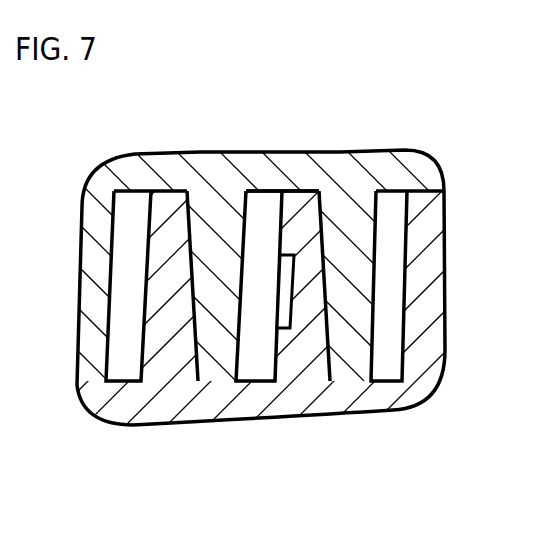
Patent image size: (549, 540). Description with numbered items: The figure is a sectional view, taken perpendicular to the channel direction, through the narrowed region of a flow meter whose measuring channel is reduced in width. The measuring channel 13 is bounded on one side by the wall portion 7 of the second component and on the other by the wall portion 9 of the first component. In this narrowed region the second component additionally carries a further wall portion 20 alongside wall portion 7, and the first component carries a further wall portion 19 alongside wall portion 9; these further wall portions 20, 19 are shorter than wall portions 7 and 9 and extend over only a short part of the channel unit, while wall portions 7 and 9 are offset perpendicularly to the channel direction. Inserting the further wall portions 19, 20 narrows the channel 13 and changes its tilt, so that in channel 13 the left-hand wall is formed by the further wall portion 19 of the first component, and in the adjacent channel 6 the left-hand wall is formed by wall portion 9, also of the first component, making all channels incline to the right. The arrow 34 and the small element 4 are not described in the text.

The insert piece 4 is at (283, 287).
The adjacent channel 6 is at (393, 308).
The wall portion 7 is at (168, 327).
The wall portion 9 is at (350, 220).
The measuring channel 13 is at (258, 355).
The further wall portion 19 is at (220, 257).
The further wall portion 20 is at (305, 275).
The joint 34 is at (305, 172).